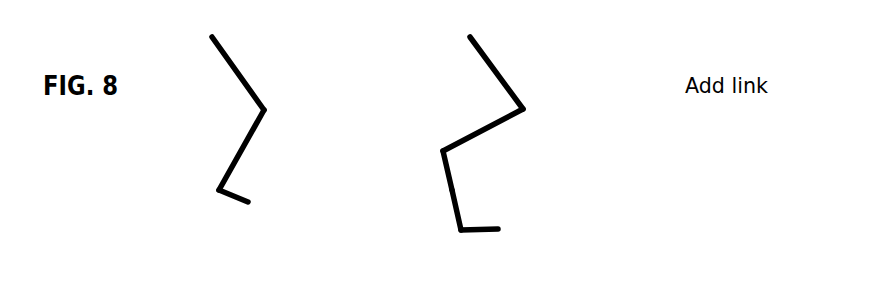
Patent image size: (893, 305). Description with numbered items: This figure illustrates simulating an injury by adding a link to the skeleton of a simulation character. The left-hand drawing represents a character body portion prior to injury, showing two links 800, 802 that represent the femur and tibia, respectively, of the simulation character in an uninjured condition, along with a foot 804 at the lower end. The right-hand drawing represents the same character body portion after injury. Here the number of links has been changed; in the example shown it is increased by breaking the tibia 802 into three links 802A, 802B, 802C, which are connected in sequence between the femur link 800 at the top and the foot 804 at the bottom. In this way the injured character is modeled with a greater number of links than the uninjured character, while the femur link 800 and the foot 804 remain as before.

The link 800 is at (243, 72).
The link 802 is at (240, 162).
The foot 804 is at (248, 203).
The link 802A is at (473, 130).
The link 802B is at (453, 183).
The link 802C is at (457, 224).